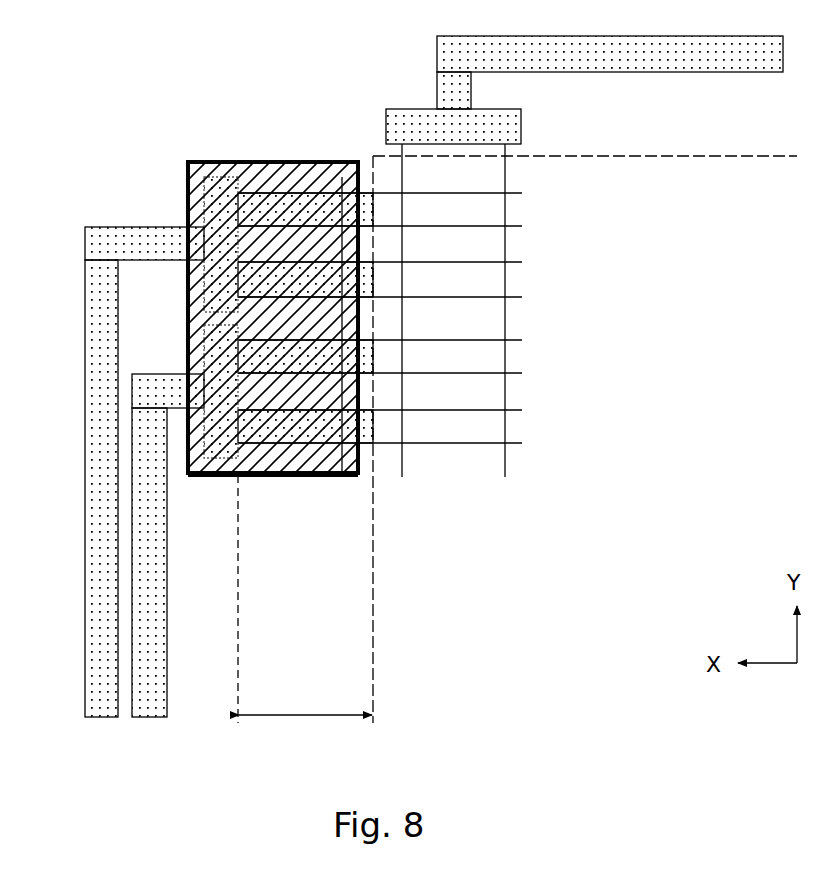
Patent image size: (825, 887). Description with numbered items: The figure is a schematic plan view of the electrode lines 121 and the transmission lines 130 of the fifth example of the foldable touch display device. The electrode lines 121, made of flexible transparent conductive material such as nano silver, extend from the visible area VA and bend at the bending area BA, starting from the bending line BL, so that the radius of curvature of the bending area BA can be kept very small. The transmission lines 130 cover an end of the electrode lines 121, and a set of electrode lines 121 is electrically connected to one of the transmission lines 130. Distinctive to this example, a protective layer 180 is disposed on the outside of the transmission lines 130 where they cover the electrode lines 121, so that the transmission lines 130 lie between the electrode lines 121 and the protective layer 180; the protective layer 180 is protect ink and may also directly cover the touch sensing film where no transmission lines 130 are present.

The electrode lines 121 is at (517, 192).
The transmission lines 130 is at (150, 228).
The protective layer 180 is at (280, 160).
The bending line BL is at (344, 477).
The bending area BA is at (305, 731).
The visible area VA is at (476, 659).